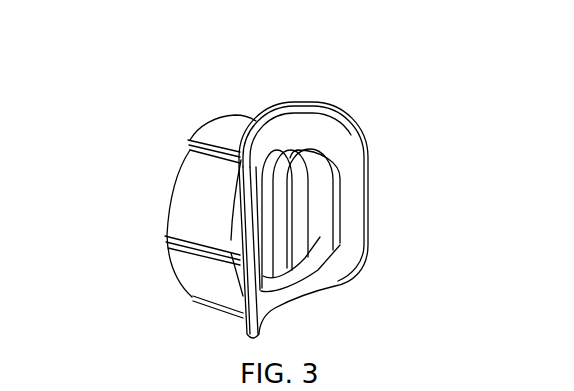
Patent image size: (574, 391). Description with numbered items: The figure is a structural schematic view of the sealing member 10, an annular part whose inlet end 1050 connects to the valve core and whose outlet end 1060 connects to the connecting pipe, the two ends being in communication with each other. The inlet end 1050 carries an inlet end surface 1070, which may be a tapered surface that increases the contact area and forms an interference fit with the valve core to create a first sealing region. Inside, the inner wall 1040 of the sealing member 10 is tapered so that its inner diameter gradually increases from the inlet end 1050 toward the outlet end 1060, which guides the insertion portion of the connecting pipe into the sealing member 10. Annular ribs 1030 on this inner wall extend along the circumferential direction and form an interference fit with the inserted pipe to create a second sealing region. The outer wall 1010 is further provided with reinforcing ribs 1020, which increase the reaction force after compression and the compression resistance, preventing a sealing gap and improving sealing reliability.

The sealing member 10 is at (321, 20).
The outer wall 1010 is at (226, 132).
The reinforcing ribs 1020 is at (268, 128).
The annular ribs 1030 is at (297, 199).
The inner wall 1040 is at (308, 253).
The inlet end 1050 is at (353, 287).
The outlet end 1060 is at (143, 242).
The inlet end surface 1070 is at (325, 148).